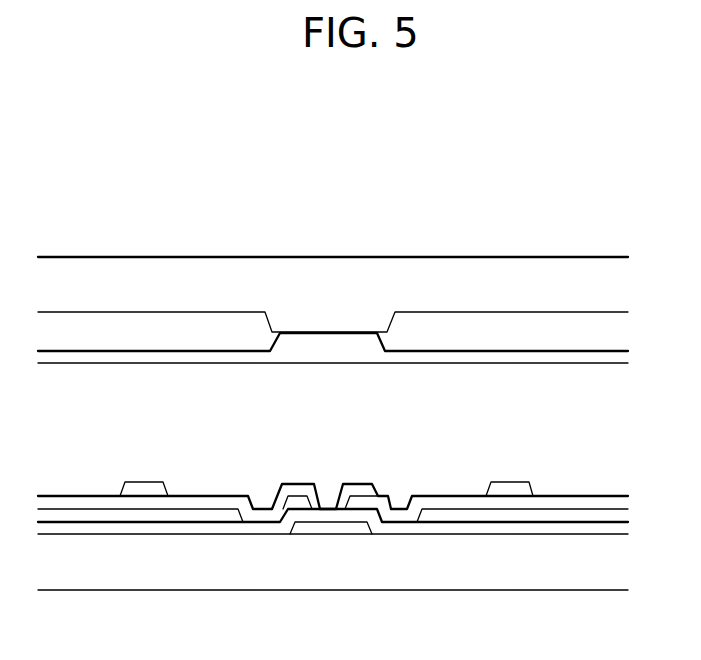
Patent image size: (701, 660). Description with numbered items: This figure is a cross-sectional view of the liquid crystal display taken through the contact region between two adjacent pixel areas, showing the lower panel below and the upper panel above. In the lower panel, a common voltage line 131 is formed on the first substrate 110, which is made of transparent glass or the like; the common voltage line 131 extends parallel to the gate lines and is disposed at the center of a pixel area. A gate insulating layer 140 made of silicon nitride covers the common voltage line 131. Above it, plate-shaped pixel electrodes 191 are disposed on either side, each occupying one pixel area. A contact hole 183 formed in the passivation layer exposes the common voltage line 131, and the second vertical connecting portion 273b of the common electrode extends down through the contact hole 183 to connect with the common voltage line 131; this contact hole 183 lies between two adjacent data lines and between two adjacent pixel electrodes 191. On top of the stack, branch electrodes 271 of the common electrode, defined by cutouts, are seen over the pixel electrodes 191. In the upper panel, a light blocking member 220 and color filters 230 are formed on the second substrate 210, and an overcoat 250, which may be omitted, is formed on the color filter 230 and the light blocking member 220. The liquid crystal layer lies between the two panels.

The first substrate 110 is at (567, 570).
The common voltage line 131 is at (329, 527).
The gate insulating layer 140 is at (248, 527).
The contact hole 183 is at (355, 501).
The pixel electrode 191 is at (155, 515).
The branch electrode 271 is at (146, 490).
The second vertical connecting portion 273b is at (298, 488).
The second substrate 210 is at (537, 280).
The light blocking member 220 is at (330, 323).
The color filter 230 is at (442, 335).
The overcoat 250 is at (190, 358).